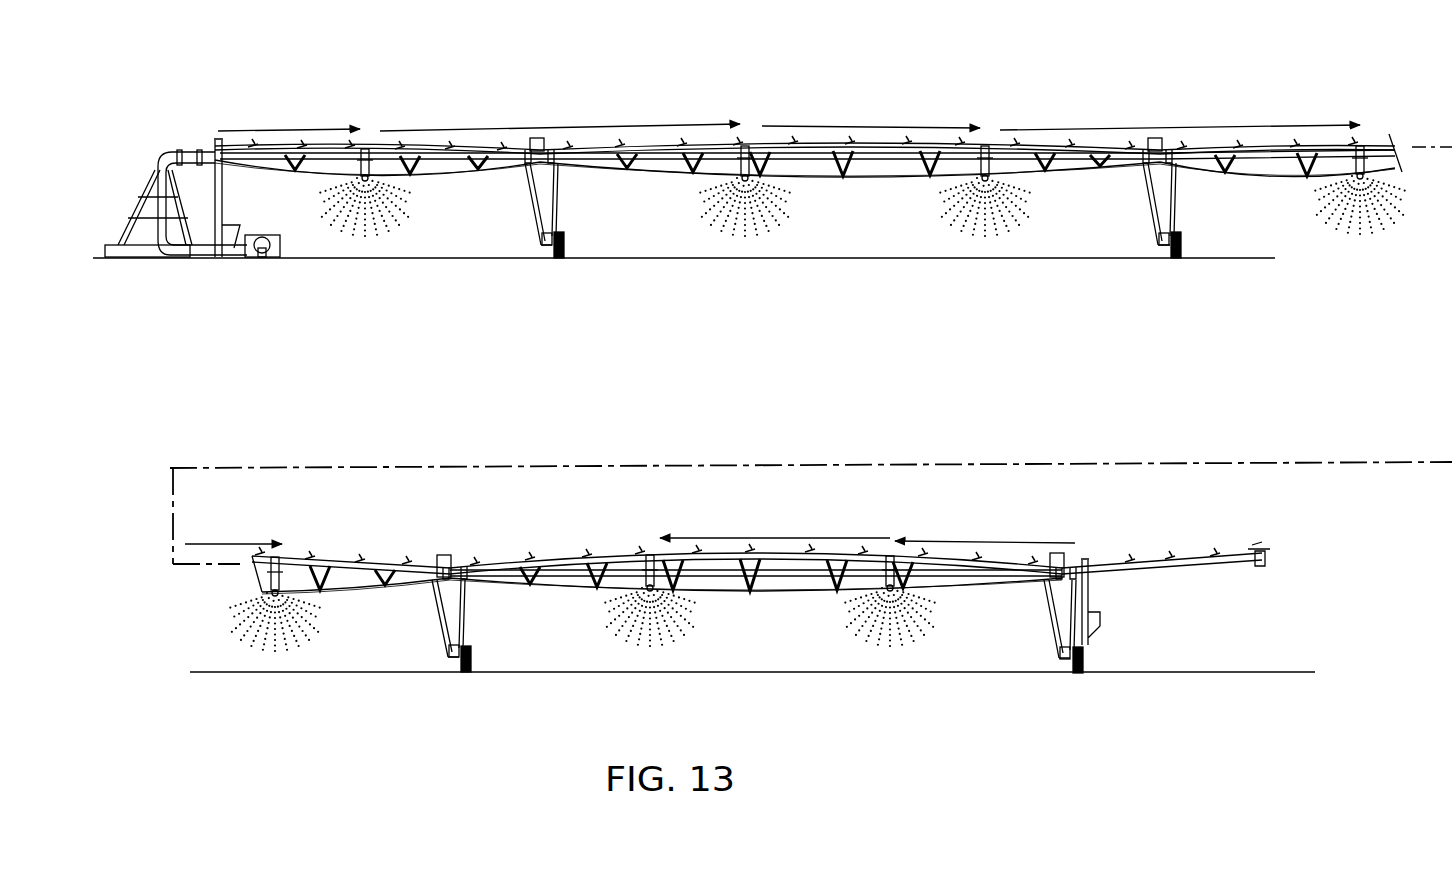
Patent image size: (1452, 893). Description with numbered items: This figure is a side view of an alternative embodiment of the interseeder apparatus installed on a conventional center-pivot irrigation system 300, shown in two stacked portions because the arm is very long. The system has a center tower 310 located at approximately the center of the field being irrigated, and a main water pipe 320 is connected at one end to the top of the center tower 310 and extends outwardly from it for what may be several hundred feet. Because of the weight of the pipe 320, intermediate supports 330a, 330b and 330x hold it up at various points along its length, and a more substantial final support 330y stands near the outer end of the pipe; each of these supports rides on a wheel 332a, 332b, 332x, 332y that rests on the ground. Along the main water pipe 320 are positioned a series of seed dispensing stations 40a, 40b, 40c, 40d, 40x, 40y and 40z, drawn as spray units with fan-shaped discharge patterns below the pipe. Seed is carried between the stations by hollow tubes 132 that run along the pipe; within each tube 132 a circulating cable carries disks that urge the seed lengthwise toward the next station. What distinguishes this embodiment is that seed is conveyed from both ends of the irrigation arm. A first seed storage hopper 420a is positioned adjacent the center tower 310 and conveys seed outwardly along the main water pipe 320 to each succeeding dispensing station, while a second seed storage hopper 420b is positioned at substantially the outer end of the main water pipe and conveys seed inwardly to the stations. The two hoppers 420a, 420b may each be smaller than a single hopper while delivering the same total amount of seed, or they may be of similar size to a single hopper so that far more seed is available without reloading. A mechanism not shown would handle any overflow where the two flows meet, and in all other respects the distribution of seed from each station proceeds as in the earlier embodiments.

The center-pivot irrigation system 300 is at (170, 135).
The center tower 310 is at (168, 230).
The hollow tube 132 is at (325, 150).
The main water pipe 320 is at (468, 165).
The first seed storage hopper 420a is at (207, 205).
The dispensing station 40a is at (383, 195).
The dispensing station 40b is at (750, 195).
The dispensing station 40c is at (975, 200).
The dispensing station 40d is at (1350, 190).
The intermediate support 330a is at (527, 208).
The intermediate support 330b is at (1140, 200).
The tower wheel 332a is at (575, 243).
The tower wheel 332b is at (1172, 250).
The dispensing station 40x is at (272, 615).
The dispensing station 40y is at (648, 612).
The dispensing station 40z is at (888, 610).
The intermediate support 330x is at (430, 617).
The final support 330y is at (1045, 610).
The tower wheel 332x is at (472, 657).
The tower wheel 332y is at (1085, 655).
The second seed storage hopper 420b is at (1098, 643).